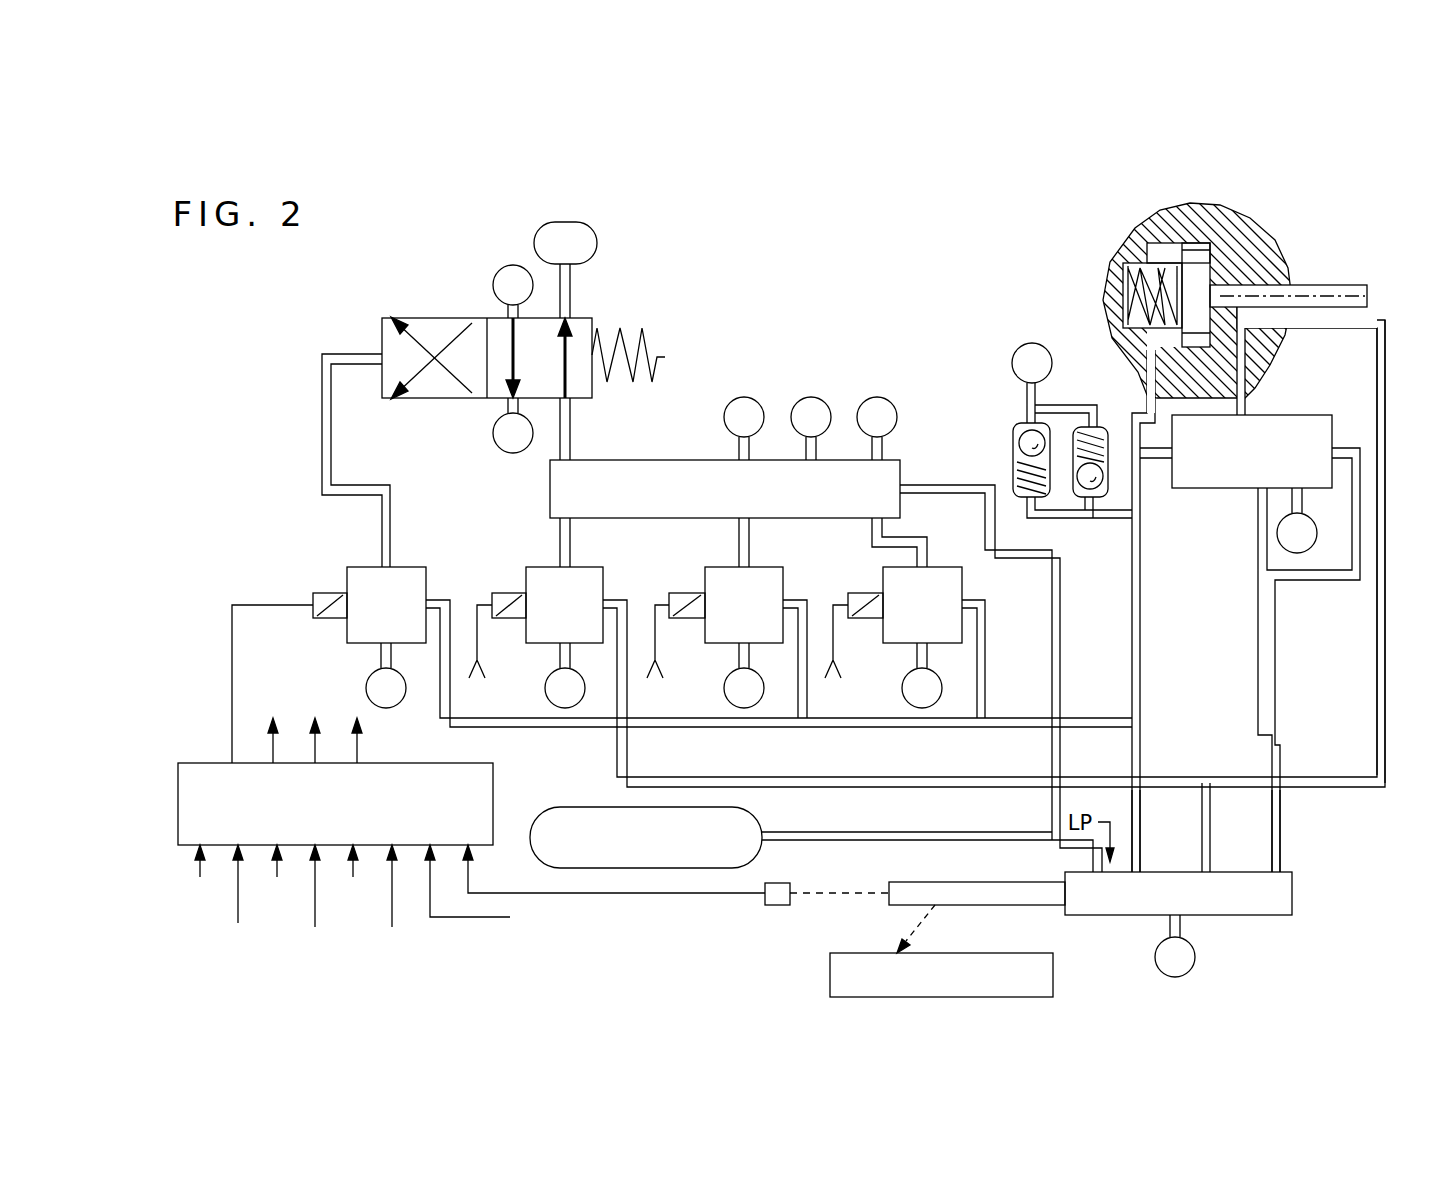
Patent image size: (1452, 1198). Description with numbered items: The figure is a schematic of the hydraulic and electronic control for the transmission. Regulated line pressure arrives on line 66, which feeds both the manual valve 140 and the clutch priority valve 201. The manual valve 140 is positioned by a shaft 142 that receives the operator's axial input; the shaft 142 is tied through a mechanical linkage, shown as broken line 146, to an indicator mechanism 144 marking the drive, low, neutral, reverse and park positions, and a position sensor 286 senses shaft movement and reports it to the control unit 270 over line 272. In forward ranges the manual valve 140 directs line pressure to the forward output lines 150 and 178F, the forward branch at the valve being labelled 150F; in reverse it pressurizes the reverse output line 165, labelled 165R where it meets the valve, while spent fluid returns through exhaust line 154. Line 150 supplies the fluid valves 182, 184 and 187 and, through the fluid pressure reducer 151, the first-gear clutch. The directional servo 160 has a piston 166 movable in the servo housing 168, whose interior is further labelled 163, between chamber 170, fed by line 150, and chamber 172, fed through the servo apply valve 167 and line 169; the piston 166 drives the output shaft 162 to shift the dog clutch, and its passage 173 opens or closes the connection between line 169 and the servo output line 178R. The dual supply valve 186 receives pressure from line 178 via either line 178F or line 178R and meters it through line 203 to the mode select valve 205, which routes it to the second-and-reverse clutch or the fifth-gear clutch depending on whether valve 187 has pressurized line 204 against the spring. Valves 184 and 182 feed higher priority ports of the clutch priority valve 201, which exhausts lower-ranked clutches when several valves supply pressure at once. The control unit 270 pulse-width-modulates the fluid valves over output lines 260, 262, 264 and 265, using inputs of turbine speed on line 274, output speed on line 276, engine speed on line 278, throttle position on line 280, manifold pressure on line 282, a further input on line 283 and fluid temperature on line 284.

The mode select valve 205 is at (420, 318).
The line 204 is at (322, 417).
The line 203 is at (572, 445).
The clutch priority valve 201 is at (678, 460).
The electrically operated fluid valve 187 is at (362, 568).
The dual supply valve 186 is at (535, 568).
The electrically operated fluid valve 184 is at (715, 568).
The electrically operated fluid valve 182 is at (893, 568).
The forward output line 150 is at (722, 727).
The line 178 is at (895, 775).
The output line 178R is at (1386, 650).
The forward output line 178F is at (1210, 848).
The passage 150F is at (1141, 838).
The line 66 is at (1062, 650).
The fluid pressure reducer 151 is at (1003, 433).
The directional servo 160 is at (1166, 289).
The spring chamber 163 is at (1167, 255).
The piston 166 is at (1190, 257).
The servo housing 168 is at (1208, 212).
The chamber 170 is at (1118, 300).
The chamber 172 is at (1213, 260).
The passage 173 is at (1255, 303).
The output shaft 162 is at (1355, 293).
The line 169 is at (1245, 405).
The servo apply valve 167 is at (1300, 415).
The reverse output line 165 is at (1268, 630).
The passage 165R is at (1281, 843).
The manual valve 140 is at (1292, 888).
The exhaust line 154 is at (1183, 928).
The shaft 142 is at (980, 882).
The broken line 146 is at (935, 920).
The indicator mechanism 144 is at (830, 975).
The position sensor 286 is at (765, 900).
The input line 272 is at (620, 895).
The control unit 270 is at (213, 773).
The output line 265 is at (222, 640).
The output line 264 is at (275, 745).
The output line 262 is at (318, 745).
The output line 260 is at (360, 745).
The input line 274 is at (196, 877).
The input line 278 is at (238, 903).
The input line 276 is at (262, 890).
The input line 280 is at (318, 910).
The input line 282 is at (360, 880).
The input line 283 is at (395, 895).
The input line 284 is at (490, 920).